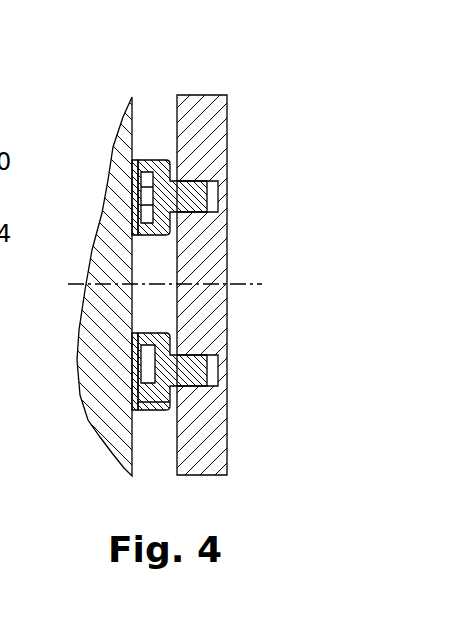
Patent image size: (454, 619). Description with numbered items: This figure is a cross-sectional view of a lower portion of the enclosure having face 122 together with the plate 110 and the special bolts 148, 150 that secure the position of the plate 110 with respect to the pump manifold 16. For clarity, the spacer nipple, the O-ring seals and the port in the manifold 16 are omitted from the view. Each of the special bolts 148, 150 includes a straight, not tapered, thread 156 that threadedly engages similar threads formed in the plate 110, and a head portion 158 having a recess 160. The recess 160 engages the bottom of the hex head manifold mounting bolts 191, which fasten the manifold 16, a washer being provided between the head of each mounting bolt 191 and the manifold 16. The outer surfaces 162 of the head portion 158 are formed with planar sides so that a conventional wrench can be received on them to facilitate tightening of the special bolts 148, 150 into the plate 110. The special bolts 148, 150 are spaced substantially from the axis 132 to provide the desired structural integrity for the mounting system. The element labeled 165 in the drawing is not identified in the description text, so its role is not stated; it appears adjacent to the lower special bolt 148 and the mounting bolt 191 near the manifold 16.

The manifold 16 is at (115, 198).
The plate 110 is at (217, 302).
The face 122 is at (128, 113).
The axis 132 is at (240, 283).
The special bolt 148 is at (170, 378).
The special bolt 150 is at (195, 197).
The straight thread 156 is at (200, 370).
The head portion 158 is at (150, 236).
The recess 160 is at (150, 177).
The outer surfaces 162 is at (157, 332).
The washer 165 is at (137, 374).
The hex head manifold mounting bolt 191 is at (145, 204).